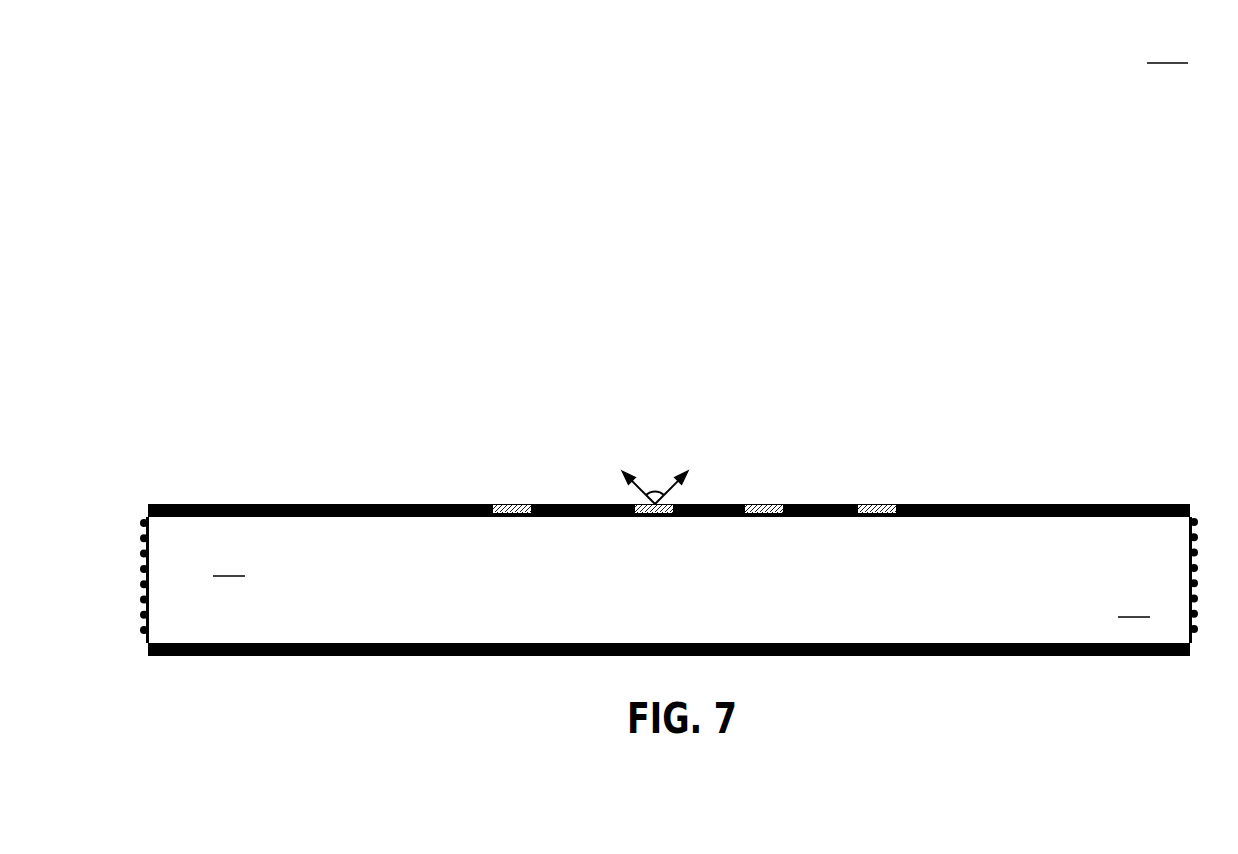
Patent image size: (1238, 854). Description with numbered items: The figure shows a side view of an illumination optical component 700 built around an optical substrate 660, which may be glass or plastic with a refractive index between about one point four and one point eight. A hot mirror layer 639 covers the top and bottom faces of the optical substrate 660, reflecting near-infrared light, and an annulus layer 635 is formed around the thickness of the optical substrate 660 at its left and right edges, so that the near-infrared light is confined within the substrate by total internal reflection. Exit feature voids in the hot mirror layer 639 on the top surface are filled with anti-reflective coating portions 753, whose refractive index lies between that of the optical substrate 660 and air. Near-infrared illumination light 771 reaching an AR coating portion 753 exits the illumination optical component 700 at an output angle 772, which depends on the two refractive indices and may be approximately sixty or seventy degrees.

The illumination optical component 700 is at (1167, 52).
The optical substrate 660 is at (669, 580).
The hot mirror layer 639 is at (133, 511).
The annulus layer 635 is at (143, 673).
The anti-reflective coating portions 753 is at (505, 480).
The near-infrared illumination light 771 is at (632, 479).
The output angle 772 is at (655, 488).